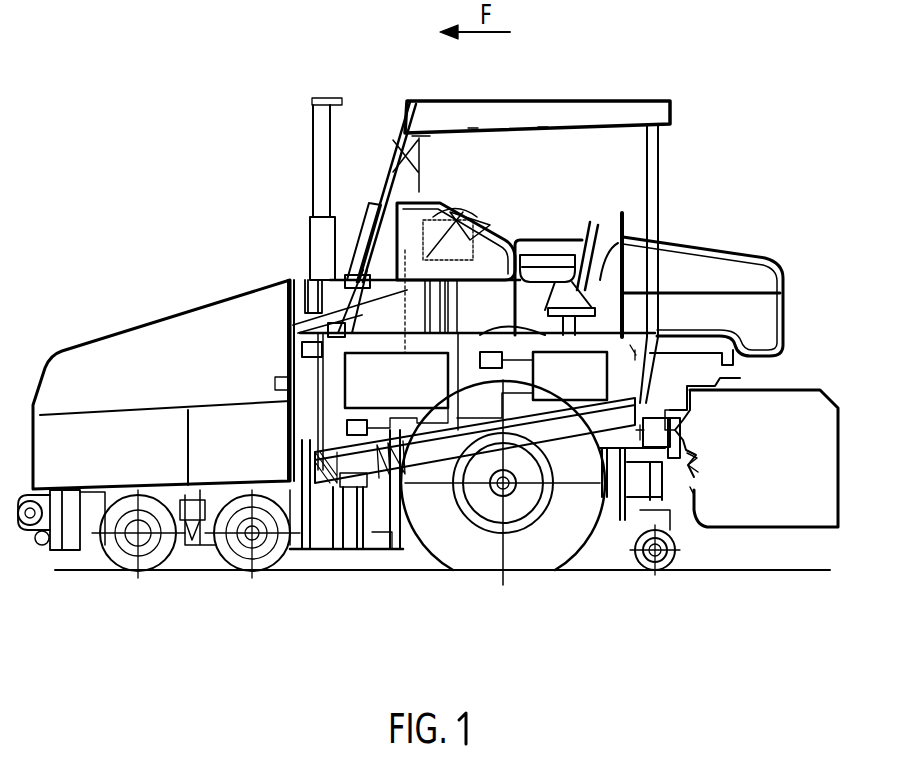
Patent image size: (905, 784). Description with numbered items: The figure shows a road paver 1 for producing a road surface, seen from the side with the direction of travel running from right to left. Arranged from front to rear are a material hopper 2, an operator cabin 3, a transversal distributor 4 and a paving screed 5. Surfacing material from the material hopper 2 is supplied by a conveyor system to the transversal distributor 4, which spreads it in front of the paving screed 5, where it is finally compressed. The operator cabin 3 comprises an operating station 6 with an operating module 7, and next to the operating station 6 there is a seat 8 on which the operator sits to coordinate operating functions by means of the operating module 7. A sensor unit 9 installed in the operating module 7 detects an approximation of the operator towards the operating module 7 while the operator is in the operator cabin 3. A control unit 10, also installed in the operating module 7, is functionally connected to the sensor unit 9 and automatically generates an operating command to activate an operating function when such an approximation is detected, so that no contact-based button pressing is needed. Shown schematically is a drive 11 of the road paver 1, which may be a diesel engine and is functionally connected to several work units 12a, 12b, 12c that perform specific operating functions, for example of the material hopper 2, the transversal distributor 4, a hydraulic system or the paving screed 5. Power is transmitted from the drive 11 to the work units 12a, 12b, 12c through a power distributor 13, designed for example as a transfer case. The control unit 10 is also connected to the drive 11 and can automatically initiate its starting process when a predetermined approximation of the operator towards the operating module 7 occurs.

The road paver 1 is at (129, 166).
The material hopper 2 is at (160, 348).
The operator cabin 3 is at (647, 96).
The transversal distributor 4 is at (678, 520).
The paving screed 5 is at (801, 406).
The operating station 6 is at (476, 198).
The operating module 7 is at (447, 200).
The seat 8 is at (593, 216).
The sensor unit 9 is at (512, 225).
The control unit 10 is at (440, 235).
The drive 11 is at (410, 392).
The work unit 12a is at (295, 440).
The work unit 12b is at (588, 390).
The work unit 12c is at (496, 370).
The power distributor 13 is at (430, 417).